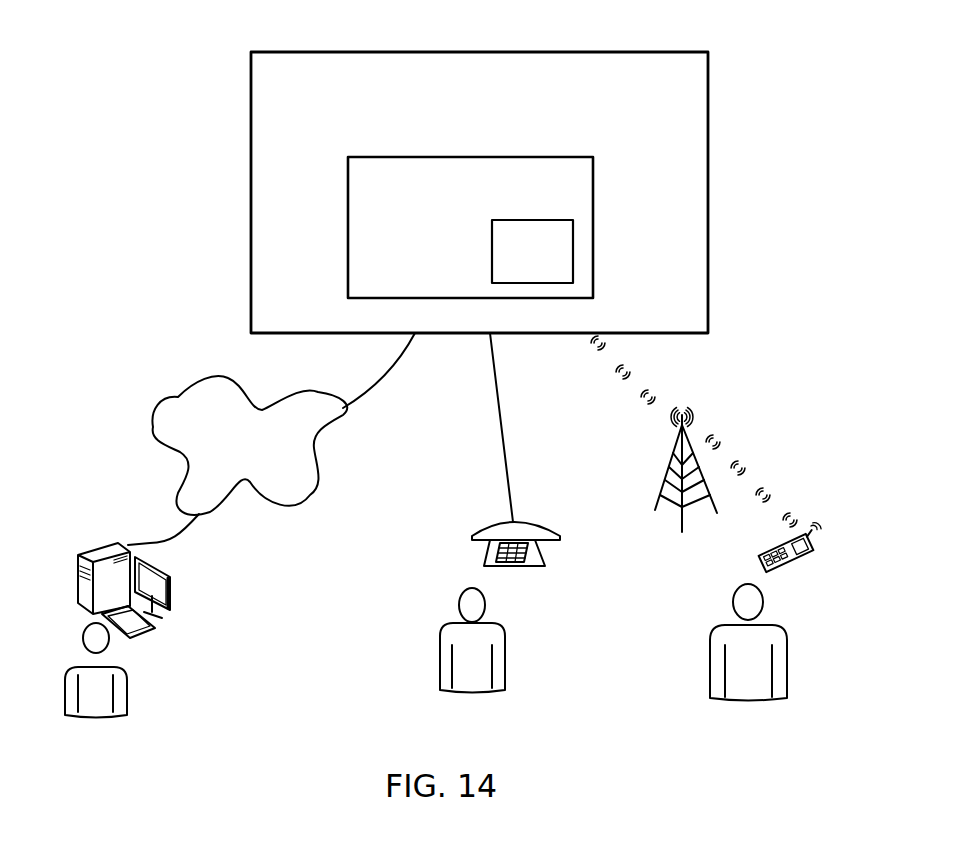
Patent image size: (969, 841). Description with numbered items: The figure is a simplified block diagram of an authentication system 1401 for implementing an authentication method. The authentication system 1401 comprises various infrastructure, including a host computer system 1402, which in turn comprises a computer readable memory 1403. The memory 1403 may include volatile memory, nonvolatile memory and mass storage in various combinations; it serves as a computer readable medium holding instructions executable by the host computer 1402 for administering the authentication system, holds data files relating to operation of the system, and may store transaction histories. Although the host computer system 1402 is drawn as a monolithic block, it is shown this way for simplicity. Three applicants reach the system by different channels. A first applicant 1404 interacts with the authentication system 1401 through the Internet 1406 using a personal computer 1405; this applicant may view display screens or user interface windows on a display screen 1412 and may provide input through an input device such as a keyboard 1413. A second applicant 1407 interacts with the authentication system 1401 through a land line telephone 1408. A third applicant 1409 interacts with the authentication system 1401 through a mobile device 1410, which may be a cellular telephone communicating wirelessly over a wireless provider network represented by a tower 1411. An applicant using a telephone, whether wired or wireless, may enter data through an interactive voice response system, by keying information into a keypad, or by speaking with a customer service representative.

The authentication system 1401 is at (270, 52).
The host computer system 1402 is at (425, 265).
The computer readable memory 1403 is at (553, 265).
The first applicant 1404 is at (123, 665).
The personal computer 1405 is at (117, 545).
The Internet 1406 is at (170, 397).
The second applicant 1407 is at (505, 658).
The land line telephone 1408 is at (478, 532).
The third applicant 1409 is at (785, 642).
The mobile device 1410 is at (815, 522).
The tower 1411 is at (692, 398).
The display screen 1412 is at (172, 582).
The keyboard 1413 is at (153, 630).